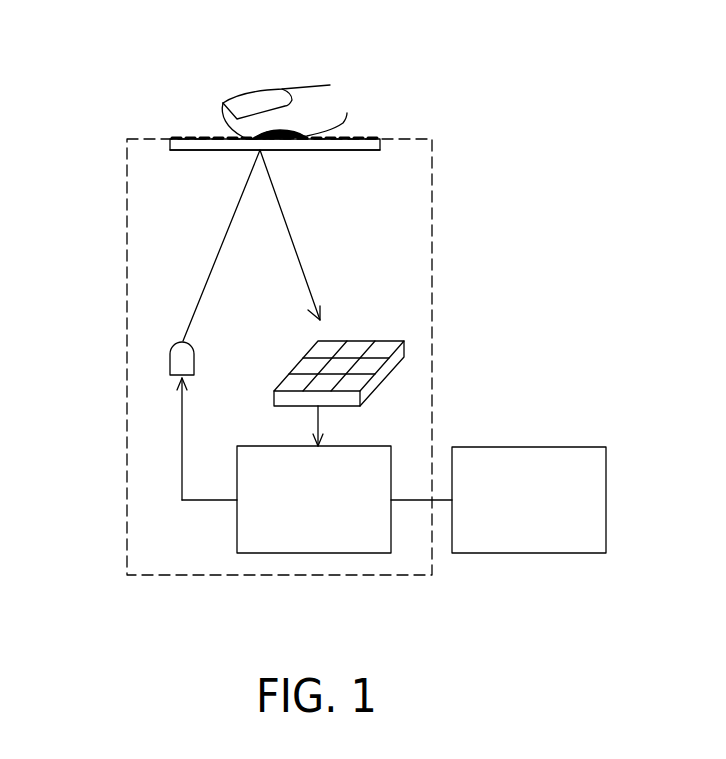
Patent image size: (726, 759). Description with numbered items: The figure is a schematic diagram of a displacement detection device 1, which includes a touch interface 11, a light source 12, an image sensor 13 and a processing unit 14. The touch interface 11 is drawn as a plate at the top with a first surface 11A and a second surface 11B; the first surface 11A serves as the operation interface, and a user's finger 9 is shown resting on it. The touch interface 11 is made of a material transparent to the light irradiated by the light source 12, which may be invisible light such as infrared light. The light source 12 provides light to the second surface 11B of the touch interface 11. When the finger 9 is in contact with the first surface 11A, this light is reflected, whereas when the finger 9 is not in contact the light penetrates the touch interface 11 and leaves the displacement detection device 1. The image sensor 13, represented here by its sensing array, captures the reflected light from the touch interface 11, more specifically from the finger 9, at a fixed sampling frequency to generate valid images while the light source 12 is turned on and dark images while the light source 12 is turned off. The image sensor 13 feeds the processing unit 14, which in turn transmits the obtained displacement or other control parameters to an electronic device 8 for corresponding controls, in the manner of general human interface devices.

The displacement detection device 1 is at (433, 290).
The electronic device 8 is at (489, 447).
The finger 9 is at (330, 85).
The touch interface 11 is at (168, 141).
The first surface 11A is at (370, 137).
The second surface 11B is at (378, 150).
The light source 12 is at (170, 360).
The image sensor 13 is at (388, 376).
The processing unit 14 is at (237, 541).